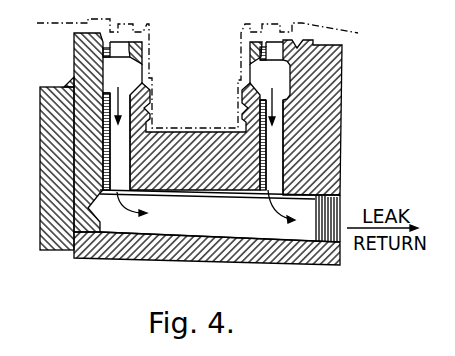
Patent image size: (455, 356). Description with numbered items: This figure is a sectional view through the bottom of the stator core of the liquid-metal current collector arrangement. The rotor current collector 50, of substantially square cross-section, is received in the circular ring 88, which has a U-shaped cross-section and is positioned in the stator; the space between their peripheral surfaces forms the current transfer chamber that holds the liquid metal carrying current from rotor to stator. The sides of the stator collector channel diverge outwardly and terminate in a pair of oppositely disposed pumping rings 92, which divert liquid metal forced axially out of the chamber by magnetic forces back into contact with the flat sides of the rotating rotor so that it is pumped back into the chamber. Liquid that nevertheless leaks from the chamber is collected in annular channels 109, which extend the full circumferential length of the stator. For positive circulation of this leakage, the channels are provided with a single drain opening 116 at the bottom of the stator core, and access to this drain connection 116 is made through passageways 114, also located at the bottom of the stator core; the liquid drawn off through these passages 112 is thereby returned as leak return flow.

The rotor current collector 50 is at (207, 63).
The circular ring 88 is at (325, 62).
The pumping rings 92 is at (147, 75).
The annular channels 109 is at (454, 80).
The leak passages 112 is at (270, 146).
The passageways 114 is at (205, 231).
The drain opening 116 is at (331, 213).